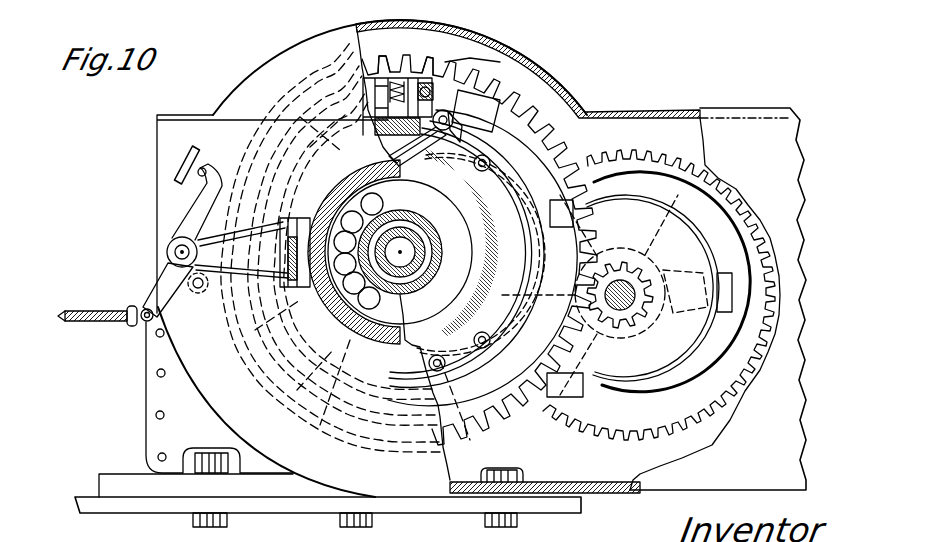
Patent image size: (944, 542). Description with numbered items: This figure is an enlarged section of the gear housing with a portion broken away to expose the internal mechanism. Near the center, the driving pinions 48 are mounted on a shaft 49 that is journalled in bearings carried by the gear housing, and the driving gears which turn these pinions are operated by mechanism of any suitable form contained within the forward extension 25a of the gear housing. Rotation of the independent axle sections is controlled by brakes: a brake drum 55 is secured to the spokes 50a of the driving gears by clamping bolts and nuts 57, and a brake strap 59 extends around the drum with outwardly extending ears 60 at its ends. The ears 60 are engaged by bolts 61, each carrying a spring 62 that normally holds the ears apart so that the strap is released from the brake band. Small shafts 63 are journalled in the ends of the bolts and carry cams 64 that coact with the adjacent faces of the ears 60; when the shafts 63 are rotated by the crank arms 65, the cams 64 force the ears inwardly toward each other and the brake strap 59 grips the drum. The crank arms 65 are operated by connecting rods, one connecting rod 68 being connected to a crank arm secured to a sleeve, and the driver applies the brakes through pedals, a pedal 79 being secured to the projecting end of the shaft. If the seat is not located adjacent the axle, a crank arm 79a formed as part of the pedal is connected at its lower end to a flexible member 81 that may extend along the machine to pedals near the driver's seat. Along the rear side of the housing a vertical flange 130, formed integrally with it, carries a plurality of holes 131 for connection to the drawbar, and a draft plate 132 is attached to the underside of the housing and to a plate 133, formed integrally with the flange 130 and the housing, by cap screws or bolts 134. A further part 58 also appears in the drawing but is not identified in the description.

The forward extension of the gear housing 25a is at (742, 124).
The driving pinions 48 is at (628, 262).
The shaft 49 is at (634, 286).
The spokes of the driving gears 50a is at (473, 60).
The brake drum 55 is at (503, 118).
The nuts 57 is at (428, 363).
The bearing 58 is at (435, 345).
The brake strap 59 is at (553, 140).
The ears 60 is at (383, 80).
The bolts 61 is at (362, 88).
The spring 62 is at (400, 78).
The small shafts 63 is at (440, 83).
The cams 64 is at (455, 100).
The crank arms 65 is at (483, 154).
The connecting rod 68 is at (400, 160).
The pedal 79 is at (203, 212).
The crank arm 79a is at (162, 274).
The flexible member 81 is at (108, 312).
The vertical flange 130 is at (183, 395).
The holes 131 is at (158, 455).
The draft plate 132 is at (140, 505).
The plate 133 is at (112, 478).
The cap screws or bolts 134 is at (345, 521).